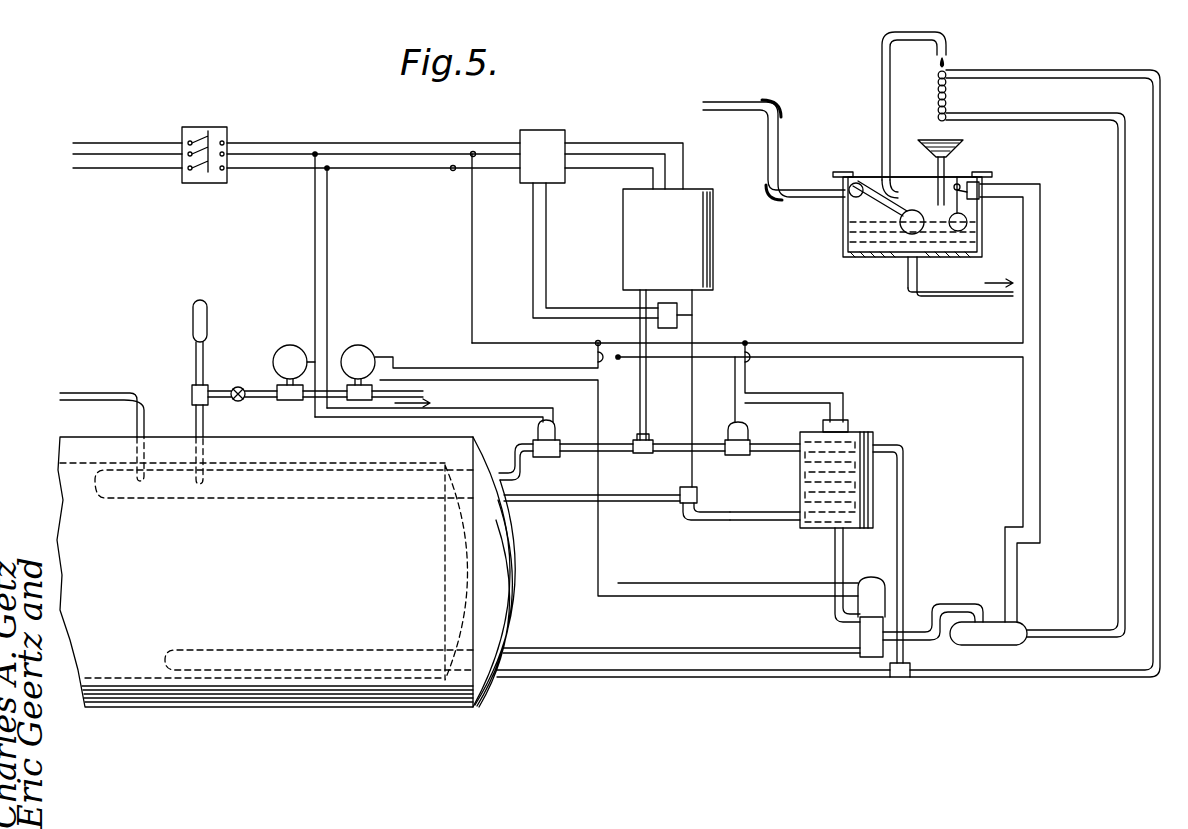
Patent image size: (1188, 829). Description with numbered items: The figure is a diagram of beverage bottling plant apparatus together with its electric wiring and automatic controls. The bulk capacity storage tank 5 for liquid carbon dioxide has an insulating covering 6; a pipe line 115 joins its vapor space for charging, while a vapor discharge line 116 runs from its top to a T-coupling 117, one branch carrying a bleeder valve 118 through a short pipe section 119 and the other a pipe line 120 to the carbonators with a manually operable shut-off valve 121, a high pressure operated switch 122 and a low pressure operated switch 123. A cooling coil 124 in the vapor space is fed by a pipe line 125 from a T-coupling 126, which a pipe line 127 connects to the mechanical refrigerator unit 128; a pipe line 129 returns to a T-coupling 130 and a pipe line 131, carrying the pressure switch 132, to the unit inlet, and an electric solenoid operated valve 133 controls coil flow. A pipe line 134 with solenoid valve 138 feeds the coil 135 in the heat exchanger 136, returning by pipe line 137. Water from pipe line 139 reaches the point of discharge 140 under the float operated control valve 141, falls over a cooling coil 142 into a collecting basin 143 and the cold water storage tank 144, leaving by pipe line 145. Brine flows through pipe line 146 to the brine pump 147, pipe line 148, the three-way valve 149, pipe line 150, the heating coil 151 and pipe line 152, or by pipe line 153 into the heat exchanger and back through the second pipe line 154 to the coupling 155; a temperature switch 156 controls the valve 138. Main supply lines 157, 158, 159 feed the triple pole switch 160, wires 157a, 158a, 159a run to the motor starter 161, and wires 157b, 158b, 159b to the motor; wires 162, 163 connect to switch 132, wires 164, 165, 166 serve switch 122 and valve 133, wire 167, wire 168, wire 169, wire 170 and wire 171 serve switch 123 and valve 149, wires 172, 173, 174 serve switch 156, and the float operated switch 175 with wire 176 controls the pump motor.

The bulk capacity storage tank 5 is at (460, 540).
The insulating covering 6 is at (508, 555).
The pipe line 115 is at (68, 393).
The vapor discharge line 116 is at (196, 415).
The T-coupling 117 is at (192, 395).
The bleeder valve 118 is at (193, 336).
The short pipe section 119 is at (196, 368).
The pipe line 120 is at (265, 398).
The manually operable shut-off valve 121 is at (237, 387).
The high pressure operated switch 122 is at (278, 353).
The low pressure operated switch 123 is at (360, 345).
The cooling coil 124 is at (290, 500).
The pipe line 125 is at (520, 466).
The T-coupling 126 is at (645, 454).
The pipe line 127 is at (646, 388).
The mechanical refrigerator unit 128 is at (623, 221).
The pipe line 129 is at (577, 502).
The T-coupling 130 is at (684, 504).
The pipe line 131 is at (698, 484).
The pressure switch 132 is at (693, 297).
The electric solenoid operated valve 133 is at (538, 432).
The pipe line 134 is at (775, 452).
The coil 135 is at (805, 487).
The heat exchanger 136 is at (818, 528).
The pipe line 137 is at (770, 521).
The electric solenoid operated valve 138 is at (748, 439).
The pipe line 139 is at (755, 102).
The point of discharge 140 is at (953, 52).
The float operated control valve 141 is at (843, 212).
The cooling coil 142 is at (948, 100).
The collecting basin 143 is at (928, 146).
The cold water storage tank 144 is at (850, 258).
The pipe line 145 is at (978, 297).
The pipe line 146 is at (1118, 405).
The brine pump 147 is at (1012, 645).
The pipe line 148 is at (960, 604).
The electric solenoid operated three-way valve 149 is at (858, 632).
The pipe line 150 is at (620, 648).
The heating coil 151 is at (320, 648).
The pipe line 152 is at (740, 678).
The pipe line 153 is at (843, 563).
The second pipe line 154 is at (950, 524).
The coupling 155 is at (898, 678).
The temperature switch 156 is at (850, 420).
The main supply line 157 is at (119, 143).
The wire 157a is at (283, 143).
The wire 157b is at (583, 143).
The main supply line 158 is at (70, 155).
The wire 158a is at (379, 156).
The wire 158b is at (645, 154).
The main supply line 159 is at (100, 170).
The wire 159a is at (268, 170).
The wire 159b is at (580, 170).
The manually operable triple pole single throw switch 160 is at (203, 184).
The motor starter 161 is at (537, 130).
The wire 162 is at (546, 303).
The wire 163 is at (533, 228).
The wire 164 is at (315, 262).
The wire 165 is at (380, 417).
The wire 166 is at (507, 408).
The wire 167 is at (538, 343).
The wire 168 is at (448, 368).
The wire 169 is at (580, 380).
The wire 170 is at (705, 583).
The wire 171 is at (468, 305).
The circuit wire 172 is at (758, 393).
The circuit wire 173 is at (794, 403).
The circuit wire 174 is at (735, 385).
The float operated switch 175 is at (977, 178).
The wire 176 is at (1040, 365).